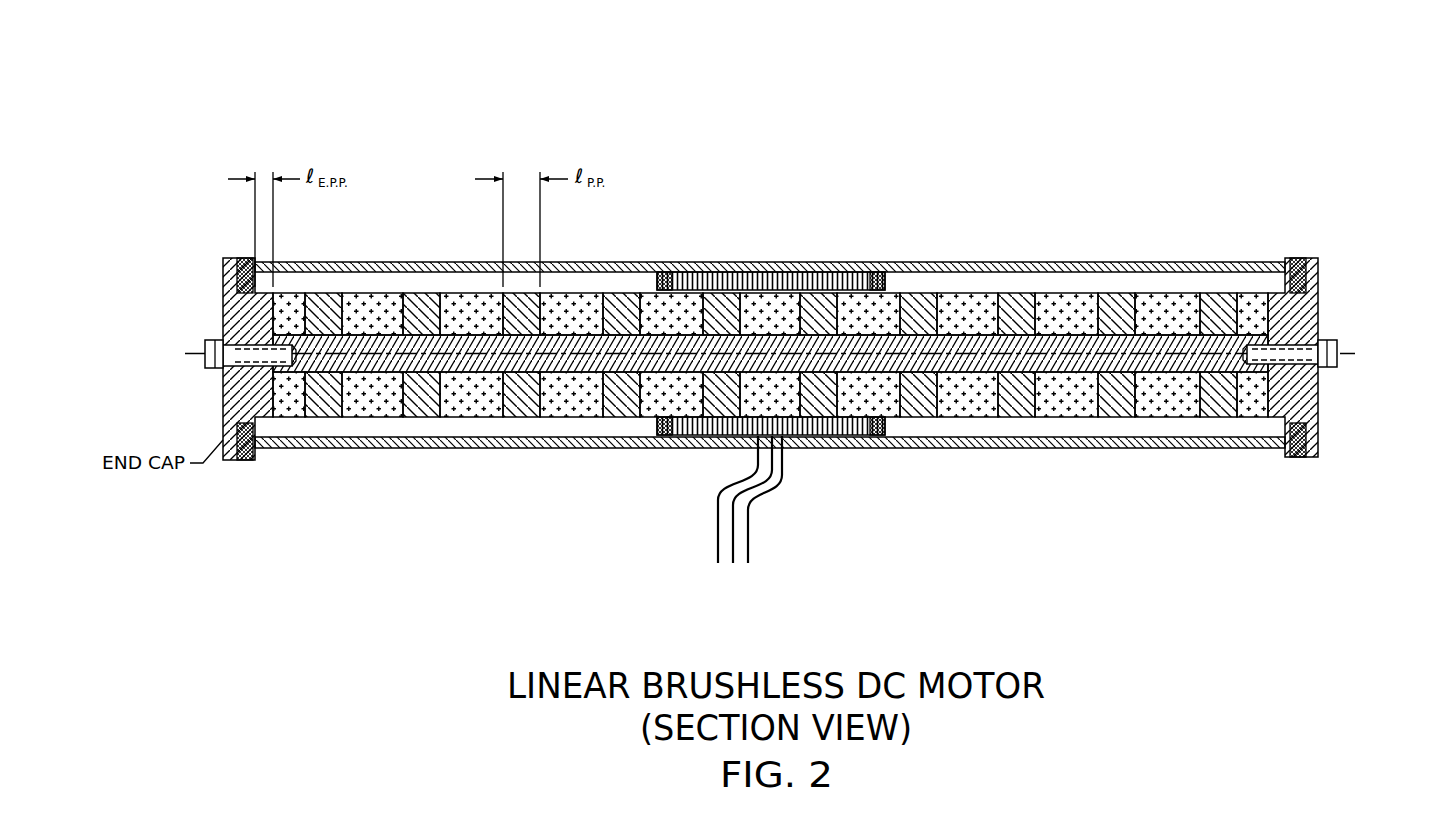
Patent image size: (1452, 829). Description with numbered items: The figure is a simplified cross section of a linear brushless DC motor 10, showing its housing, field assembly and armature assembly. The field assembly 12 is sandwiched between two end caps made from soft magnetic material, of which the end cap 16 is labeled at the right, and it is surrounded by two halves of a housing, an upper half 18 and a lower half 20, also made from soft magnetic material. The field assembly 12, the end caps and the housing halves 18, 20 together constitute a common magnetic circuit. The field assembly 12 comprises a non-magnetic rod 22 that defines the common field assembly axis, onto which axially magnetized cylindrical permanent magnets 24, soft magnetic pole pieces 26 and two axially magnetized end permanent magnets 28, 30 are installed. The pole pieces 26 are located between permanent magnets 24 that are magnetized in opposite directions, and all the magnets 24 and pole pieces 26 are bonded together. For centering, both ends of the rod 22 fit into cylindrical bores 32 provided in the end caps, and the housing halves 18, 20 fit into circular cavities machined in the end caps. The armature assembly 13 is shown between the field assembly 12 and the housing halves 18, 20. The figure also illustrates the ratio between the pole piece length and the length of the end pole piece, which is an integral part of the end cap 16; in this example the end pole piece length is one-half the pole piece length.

The linear brushless DC motor 10 is at (899, 100).
The field assembly 12 is at (804, 382).
The armature assembly 13 is at (890, 424).
The end cap 16 is at (1318, 268).
The half of housing 18 is at (1073, 260).
The half of housing 20 is at (1072, 447).
The non-magnetic rod 22 is at (695, 367).
The permanent magnet 24 is at (372, 302).
The pole piece 26 is at (623, 303).
The end permanent magnet 28 is at (290, 294).
The end permanent magnet 30 is at (1243, 302).
The cylindrical bore 32 is at (1315, 402).